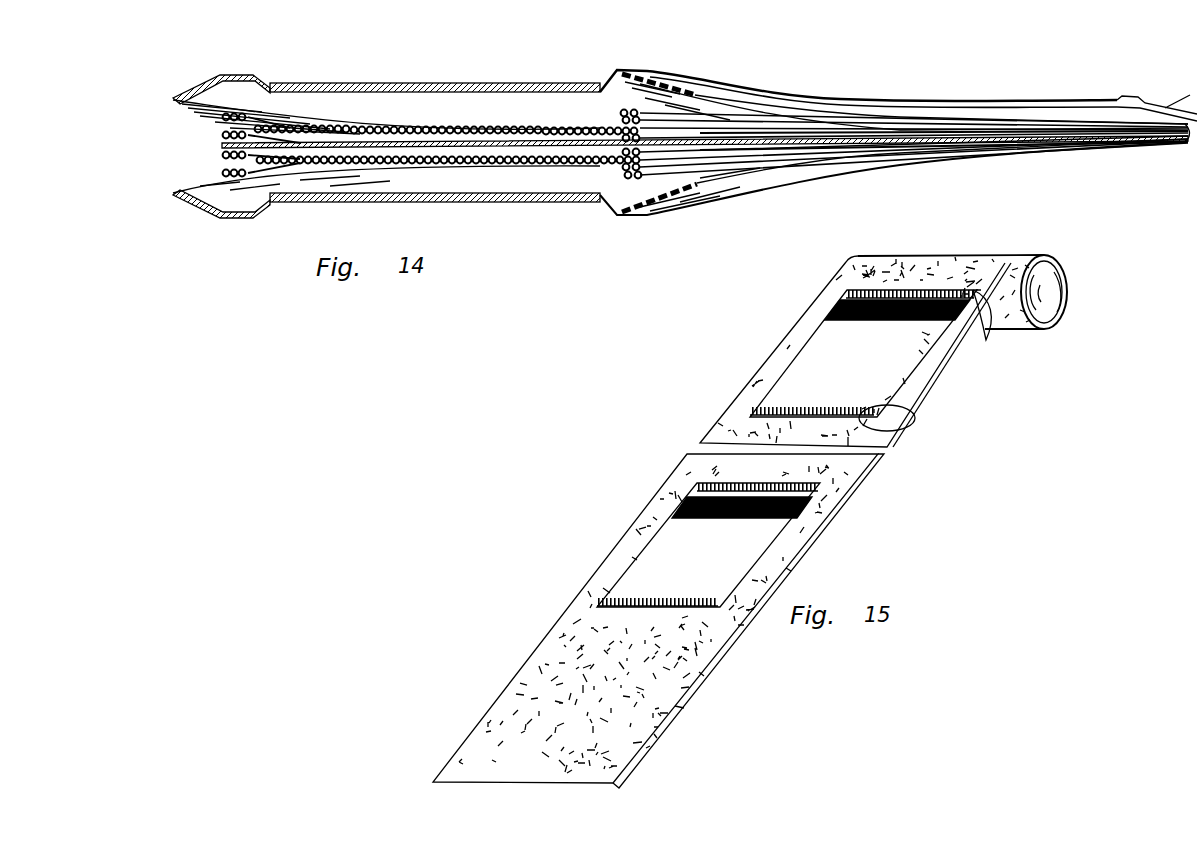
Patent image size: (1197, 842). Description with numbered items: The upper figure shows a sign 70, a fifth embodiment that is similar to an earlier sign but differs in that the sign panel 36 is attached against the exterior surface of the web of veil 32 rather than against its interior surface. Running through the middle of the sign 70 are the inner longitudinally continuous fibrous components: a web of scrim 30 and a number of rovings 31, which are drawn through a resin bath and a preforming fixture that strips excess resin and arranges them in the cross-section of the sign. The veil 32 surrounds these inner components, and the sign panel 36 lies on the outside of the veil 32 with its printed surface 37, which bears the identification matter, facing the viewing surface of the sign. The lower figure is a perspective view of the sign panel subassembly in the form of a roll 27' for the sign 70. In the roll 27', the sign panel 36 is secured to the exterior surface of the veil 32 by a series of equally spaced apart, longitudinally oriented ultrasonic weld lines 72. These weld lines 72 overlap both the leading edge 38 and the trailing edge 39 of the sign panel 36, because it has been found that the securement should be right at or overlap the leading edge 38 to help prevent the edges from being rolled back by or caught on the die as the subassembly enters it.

In FIG. 14, the web of scrim 30 is at (307, 130).
In FIG. 14, the rovings 31 is at (227, 173).
In FIG. 14, the web of veil 32 is at (627, 72).
In FIG. 15, the web of veil 32 is at (823, 300).
In FIG. 14, the sign panel 36 is at (473, 83).
In FIG. 15, the sign panel 36 is at (800, 363).
In FIG. 14, the printed surface 37 is at (412, 84).
In FIG. 15, the leading edge 38 is at (867, 438).
In FIG. 15, the trailing edge 39 is at (903, 290).
In FIG. 14, the sign 70 is at (1128, 94).
In FIG. 15, the ultrasonic weld lines 72 is at (980, 330).
In FIG. 15, the roll 27' is at (991, 292).